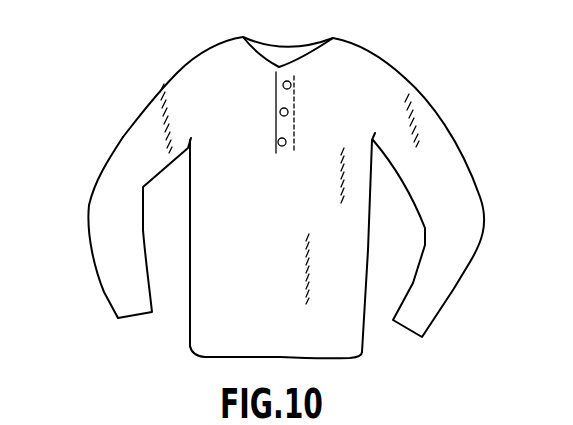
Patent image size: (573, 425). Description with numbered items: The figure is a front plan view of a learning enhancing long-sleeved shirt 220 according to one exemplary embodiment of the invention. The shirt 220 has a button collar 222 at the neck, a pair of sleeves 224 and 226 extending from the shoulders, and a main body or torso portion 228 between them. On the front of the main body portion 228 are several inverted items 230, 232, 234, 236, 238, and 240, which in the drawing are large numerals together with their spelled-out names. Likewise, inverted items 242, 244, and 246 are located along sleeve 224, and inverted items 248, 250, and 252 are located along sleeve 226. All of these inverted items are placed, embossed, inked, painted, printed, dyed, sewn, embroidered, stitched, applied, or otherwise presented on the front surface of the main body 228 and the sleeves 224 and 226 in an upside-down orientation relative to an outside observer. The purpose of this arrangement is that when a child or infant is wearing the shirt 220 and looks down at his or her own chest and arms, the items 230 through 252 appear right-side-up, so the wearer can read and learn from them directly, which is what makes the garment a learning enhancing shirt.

The long-sleeved shirt 220 is at (432, 58).
The button collar 222 is at (280, 67).
The sleeve 224 is at (487, 227).
The sleeve 226 is at (86, 223).
The main body or torso portion 228 is at (353, 348).
The inverted item 230 is at (343, 310).
The inverted item 232 is at (290, 304).
The inverted item 234 is at (204, 293).
The inverted item 236 is at (357, 225).
The inverted item 238 is at (270, 220).
The inverted item 240 is at (252, 177).
The inverted item 242 is at (443, 300).
The inverted item 244 is at (450, 210).
The inverted item 246 is at (440, 143).
The inverted item 248 is at (105, 282).
The inverted item 250 is at (107, 195).
The inverted item 252 is at (123, 130).